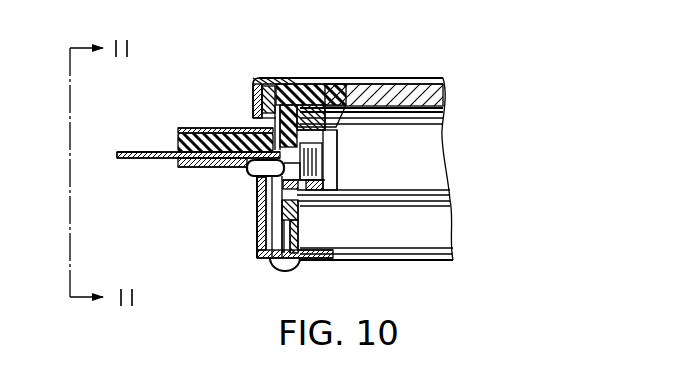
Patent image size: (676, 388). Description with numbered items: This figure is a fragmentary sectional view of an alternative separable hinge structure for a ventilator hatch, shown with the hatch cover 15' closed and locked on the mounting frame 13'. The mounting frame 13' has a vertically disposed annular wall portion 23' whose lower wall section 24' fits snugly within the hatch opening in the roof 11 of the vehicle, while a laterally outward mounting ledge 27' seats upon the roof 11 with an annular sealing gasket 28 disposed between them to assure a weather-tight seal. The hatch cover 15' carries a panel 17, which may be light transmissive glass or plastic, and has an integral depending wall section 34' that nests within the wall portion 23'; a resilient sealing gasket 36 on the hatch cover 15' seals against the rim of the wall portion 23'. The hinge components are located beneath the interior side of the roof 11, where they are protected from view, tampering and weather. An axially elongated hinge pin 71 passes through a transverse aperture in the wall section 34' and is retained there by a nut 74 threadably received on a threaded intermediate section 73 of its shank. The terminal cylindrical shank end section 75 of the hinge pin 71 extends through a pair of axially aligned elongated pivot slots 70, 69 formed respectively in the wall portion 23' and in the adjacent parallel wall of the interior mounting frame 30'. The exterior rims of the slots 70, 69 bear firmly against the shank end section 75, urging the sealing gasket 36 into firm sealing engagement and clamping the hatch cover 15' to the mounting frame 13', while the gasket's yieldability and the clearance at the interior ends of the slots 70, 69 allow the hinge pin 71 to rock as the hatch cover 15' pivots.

The roof 11 is at (152, 163).
The mounting frame 13' is at (420, 225).
The hatch cover 15' is at (336, 80).
The panel 17 is at (447, 92).
The wall portion 23' is at (228, 127).
The lower wall section 24' is at (275, 253).
The mounting ledge 27' is at (236, 109).
The sealing gasket 28 is at (178, 142).
The interior mounting frame 30' is at (198, 187).
The depending wall section 34' is at (344, 210).
The sealing gasket 36 is at (267, 80).
The pivot slot 69 is at (254, 191).
The pivot slot 70 is at (257, 200).
The hinge pin 71 is at (344, 156).
The threaded intermediate section 73 is at (318, 168).
The nut 74 is at (290, 193).
The shank end section 75 is at (257, 170).